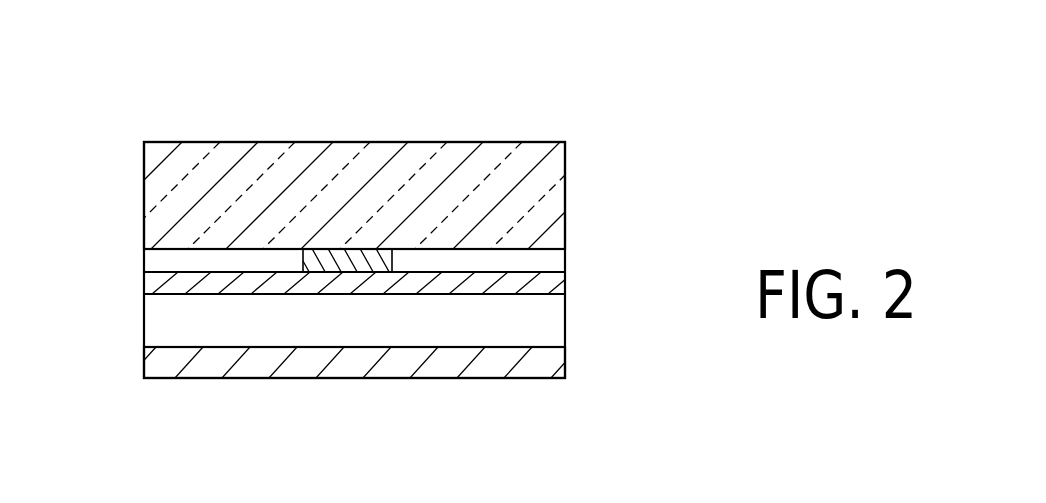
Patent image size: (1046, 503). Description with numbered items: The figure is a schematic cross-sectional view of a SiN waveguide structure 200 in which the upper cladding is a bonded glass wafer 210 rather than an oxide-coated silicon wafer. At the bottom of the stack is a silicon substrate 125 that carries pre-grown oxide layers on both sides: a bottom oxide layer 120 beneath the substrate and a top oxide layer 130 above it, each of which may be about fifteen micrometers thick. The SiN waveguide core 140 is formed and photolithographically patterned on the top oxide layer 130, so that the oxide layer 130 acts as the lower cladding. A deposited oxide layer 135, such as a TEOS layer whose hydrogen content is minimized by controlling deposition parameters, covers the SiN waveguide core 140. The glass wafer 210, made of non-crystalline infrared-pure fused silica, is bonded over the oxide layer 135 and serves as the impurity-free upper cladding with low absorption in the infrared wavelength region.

The structure 200 is at (572, 57).
The glass wafer 210 is at (557, 174).
The oxide layer 135 is at (557, 258).
The SiN waveguide core 140 is at (312, 259).
The oxide layer 130 is at (557, 284).
The silicon substrate 125 is at (557, 318).
The oxide layer 120 is at (557, 363).